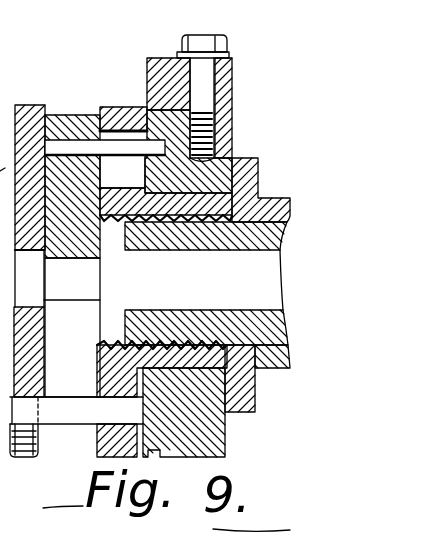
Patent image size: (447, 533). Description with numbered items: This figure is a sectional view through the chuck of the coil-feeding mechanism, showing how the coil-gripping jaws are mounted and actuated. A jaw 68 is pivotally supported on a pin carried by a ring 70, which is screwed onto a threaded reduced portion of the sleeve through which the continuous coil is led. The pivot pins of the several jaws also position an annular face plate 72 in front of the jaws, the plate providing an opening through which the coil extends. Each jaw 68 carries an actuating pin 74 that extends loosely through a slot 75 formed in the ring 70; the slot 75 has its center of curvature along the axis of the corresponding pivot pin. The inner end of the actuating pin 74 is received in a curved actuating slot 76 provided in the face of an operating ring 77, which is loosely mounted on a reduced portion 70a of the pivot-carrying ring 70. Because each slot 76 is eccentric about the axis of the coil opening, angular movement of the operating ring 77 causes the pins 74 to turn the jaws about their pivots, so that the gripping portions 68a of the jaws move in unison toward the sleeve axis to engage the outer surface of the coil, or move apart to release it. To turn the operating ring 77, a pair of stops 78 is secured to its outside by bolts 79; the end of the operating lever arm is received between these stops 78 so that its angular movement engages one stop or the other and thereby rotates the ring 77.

The jaw 68 is at (62, 163).
The gripping portion 68a is at (78, 248).
The ring 70 is at (127, 372).
The reduced portion 70a is at (257, 165).
The annular face plate 72 is at (27, 105).
The actuating pin 74 is at (72, 140).
The slot 75 is at (117, 133).
The curved actuating slot 76 is at (232, 114).
The operating ring 77 is at (232, 131).
The stop 78 is at (232, 82).
The bolt 79 is at (225, 38).